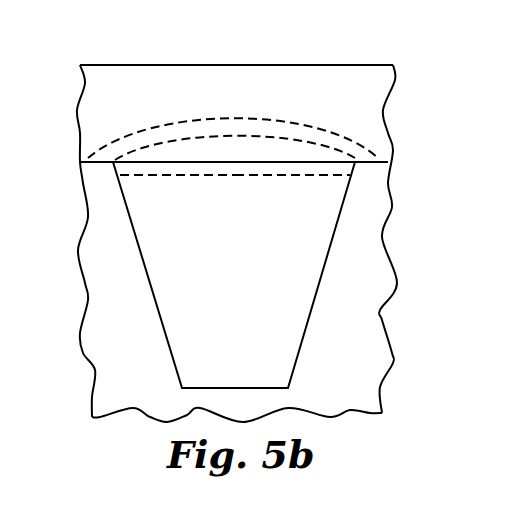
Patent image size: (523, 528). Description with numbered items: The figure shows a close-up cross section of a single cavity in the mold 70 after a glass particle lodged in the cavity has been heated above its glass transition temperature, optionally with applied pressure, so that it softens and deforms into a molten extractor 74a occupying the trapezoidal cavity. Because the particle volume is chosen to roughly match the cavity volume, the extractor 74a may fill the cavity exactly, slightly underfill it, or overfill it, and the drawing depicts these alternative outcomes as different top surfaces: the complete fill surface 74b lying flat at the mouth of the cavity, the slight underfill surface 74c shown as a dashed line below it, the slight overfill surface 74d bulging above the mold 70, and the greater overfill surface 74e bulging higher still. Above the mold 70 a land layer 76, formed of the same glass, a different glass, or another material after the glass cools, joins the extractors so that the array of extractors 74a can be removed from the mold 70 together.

The mold 70 is at (378, 315).
The land layer 76 is at (378, 108).
The molten extractor 74a is at (253, 292).
The complete fill surface 74b is at (143, 163).
The slight underfill surface 74c is at (322, 176).
The slight overfill surface 74d is at (187, 138).
The greater overfill surface 74e is at (258, 118).